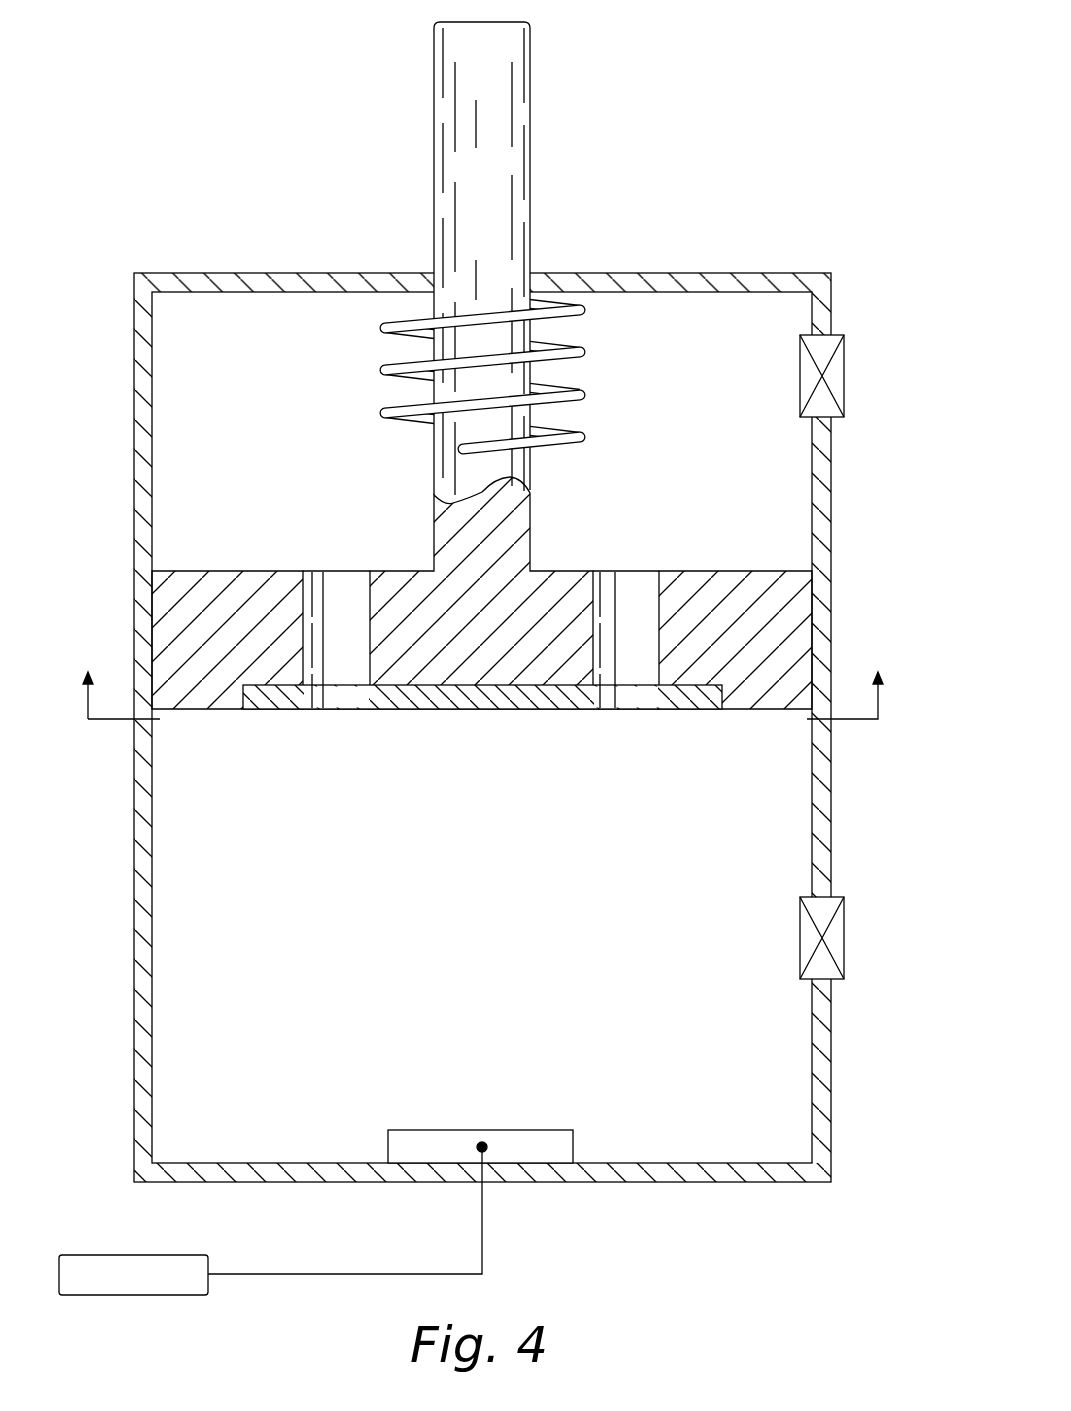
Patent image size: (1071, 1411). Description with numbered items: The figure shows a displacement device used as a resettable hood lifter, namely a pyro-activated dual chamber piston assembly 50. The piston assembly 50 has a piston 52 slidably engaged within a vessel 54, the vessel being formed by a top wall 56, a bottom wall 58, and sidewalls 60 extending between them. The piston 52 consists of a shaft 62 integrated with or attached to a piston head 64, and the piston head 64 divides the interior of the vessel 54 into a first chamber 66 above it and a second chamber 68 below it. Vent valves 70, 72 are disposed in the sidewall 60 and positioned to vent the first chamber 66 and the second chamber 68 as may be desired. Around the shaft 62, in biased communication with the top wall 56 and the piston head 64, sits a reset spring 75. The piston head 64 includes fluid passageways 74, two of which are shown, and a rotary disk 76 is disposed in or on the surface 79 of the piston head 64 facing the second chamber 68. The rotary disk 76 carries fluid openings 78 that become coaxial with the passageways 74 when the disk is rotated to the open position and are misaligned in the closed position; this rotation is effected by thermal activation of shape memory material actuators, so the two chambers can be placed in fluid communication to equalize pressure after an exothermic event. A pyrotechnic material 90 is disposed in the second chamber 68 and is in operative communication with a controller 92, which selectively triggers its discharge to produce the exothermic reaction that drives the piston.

The piston assembly 50 is at (489, 654).
The piston 52 is at (482, 417).
The vessel 54 is at (481, 702).
The top wall 56 is at (283, 273).
The bottom wall 58 is at (690, 1182).
The sidewalls 60 is at (135, 815).
The shaft 62 is at (434, 137).
The piston head 64 is at (240, 571).
The first chamber 66 is at (294, 468).
The second chamber 68 is at (496, 931).
The vent valve 70 is at (840, 378).
The vent valve 72 is at (840, 940).
The fluid passageway 74 is at (345, 596).
The reset spring 75 is at (385, 378).
The rotary disk 76 is at (525, 700).
The fluid openings 78 is at (337, 700).
The surface 79 is at (455, 700).
The pyrotechnic material 90 is at (530, 1130).
The controller 92 is at (122, 1255).